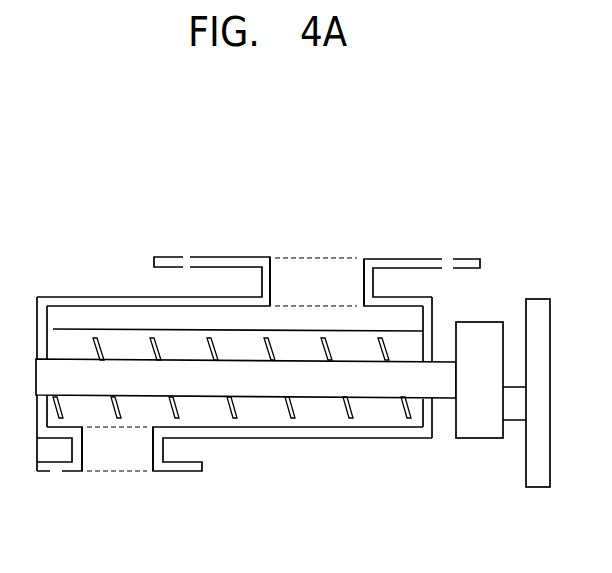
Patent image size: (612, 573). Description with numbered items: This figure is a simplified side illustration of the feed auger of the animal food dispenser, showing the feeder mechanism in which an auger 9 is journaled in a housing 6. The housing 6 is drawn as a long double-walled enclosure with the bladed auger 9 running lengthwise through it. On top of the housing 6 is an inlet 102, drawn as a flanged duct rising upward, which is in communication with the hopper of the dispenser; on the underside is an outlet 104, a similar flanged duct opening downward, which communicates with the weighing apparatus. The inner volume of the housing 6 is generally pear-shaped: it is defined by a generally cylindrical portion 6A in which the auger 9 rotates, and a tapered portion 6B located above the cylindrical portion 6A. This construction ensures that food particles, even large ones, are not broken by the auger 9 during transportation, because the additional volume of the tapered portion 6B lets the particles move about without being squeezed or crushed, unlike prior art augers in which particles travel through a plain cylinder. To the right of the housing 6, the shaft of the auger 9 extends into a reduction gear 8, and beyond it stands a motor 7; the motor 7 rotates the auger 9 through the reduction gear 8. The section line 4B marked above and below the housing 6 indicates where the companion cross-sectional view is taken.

The housing 6 is at (250, 361).
The cylindrical portion 6A is at (247, 437).
The tapered portion 6B is at (95, 302).
The motor 7 is at (536, 472).
The reduction gear 8 is at (470, 430).
The auger 9 is at (313, 388).
The inlet 102 is at (333, 267).
The outlet 104 is at (117, 452).
The section line 4B- 4B is at (243, 522).